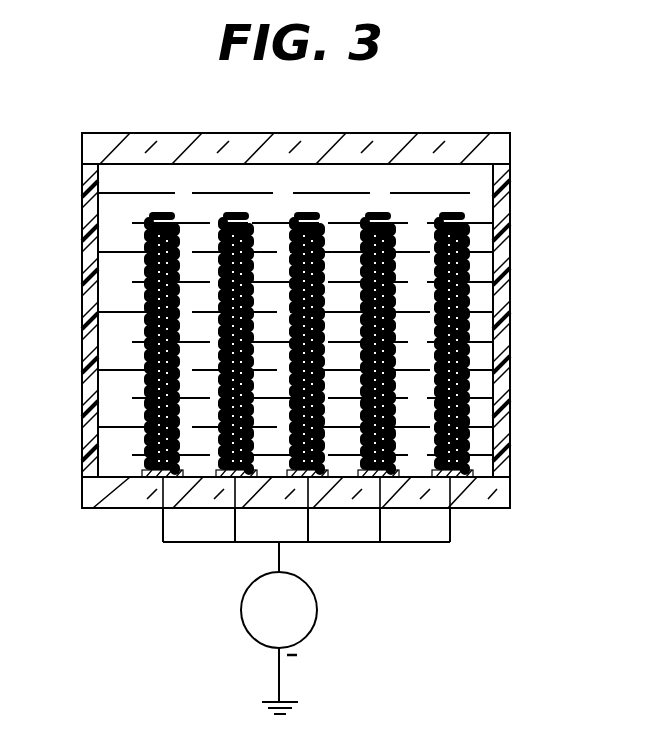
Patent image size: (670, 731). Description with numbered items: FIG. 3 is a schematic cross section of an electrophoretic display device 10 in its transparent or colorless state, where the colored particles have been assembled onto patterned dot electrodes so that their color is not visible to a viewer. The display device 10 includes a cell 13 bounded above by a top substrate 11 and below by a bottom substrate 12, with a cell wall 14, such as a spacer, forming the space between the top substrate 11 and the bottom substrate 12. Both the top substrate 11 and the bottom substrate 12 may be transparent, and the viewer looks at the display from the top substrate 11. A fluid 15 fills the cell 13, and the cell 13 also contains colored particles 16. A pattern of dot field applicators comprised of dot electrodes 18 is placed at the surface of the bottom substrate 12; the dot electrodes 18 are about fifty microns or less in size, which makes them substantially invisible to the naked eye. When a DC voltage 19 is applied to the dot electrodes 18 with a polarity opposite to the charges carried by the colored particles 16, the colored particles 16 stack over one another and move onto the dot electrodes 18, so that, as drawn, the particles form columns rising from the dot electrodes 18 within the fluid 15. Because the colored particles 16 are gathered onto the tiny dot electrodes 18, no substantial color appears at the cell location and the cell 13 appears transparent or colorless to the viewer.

The display device 10 is at (583, 167).
The top substrate 11 is at (92, 152).
The bottom substrate 12 is at (98, 496).
The cell 13 is at (523, 167).
The cell wall 14 is at (82, 272).
The fluid 15 is at (118, 357).
The colored particles 16 is at (148, 437).
The dot electrodes 18 is at (457, 473).
The DC voltage 19 is at (262, 635).